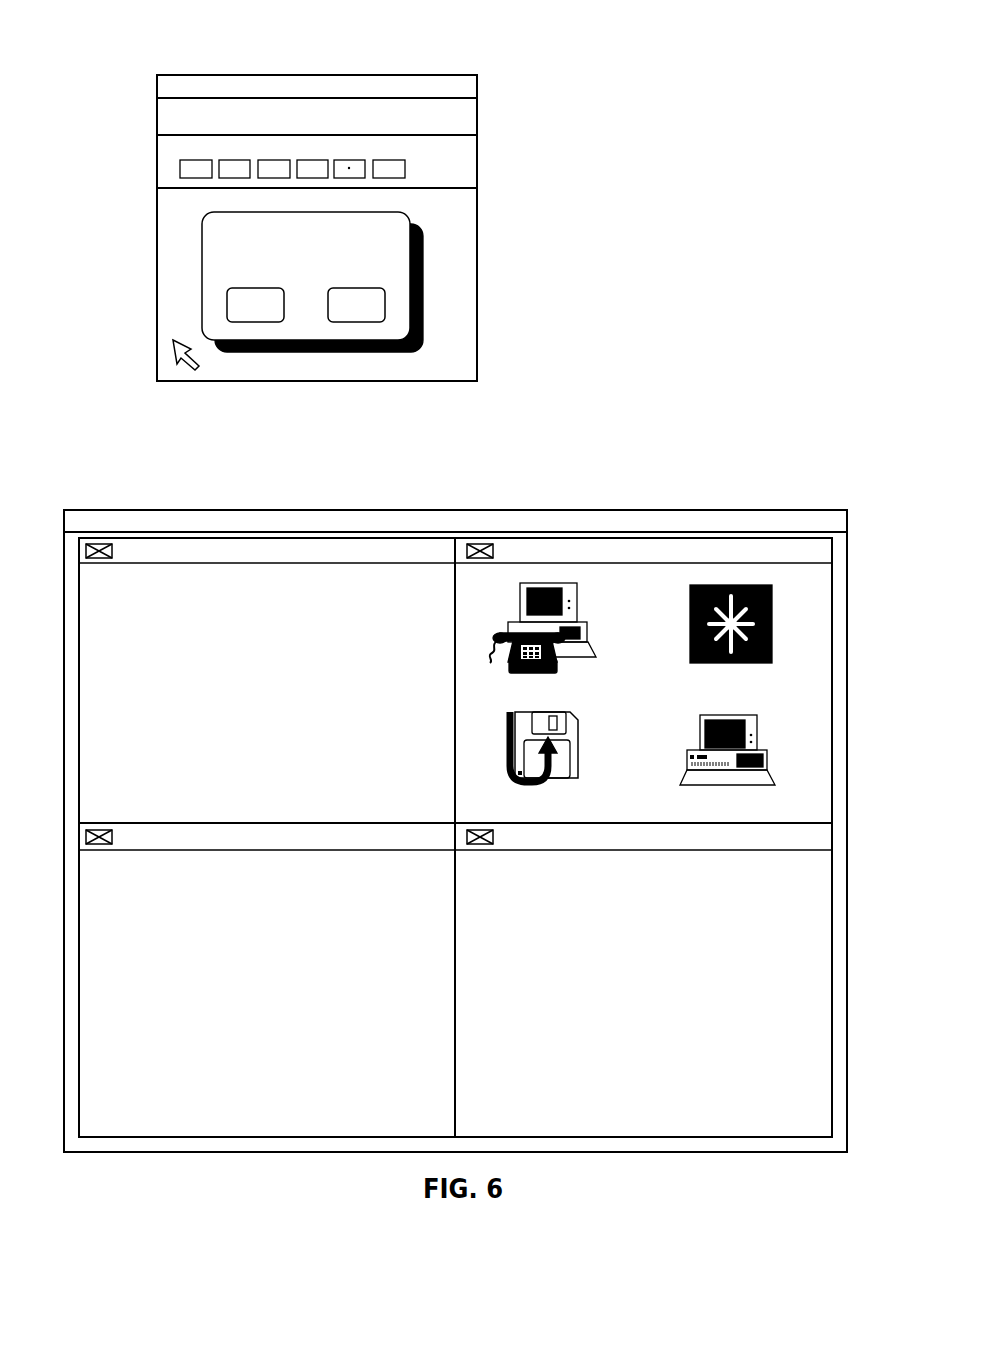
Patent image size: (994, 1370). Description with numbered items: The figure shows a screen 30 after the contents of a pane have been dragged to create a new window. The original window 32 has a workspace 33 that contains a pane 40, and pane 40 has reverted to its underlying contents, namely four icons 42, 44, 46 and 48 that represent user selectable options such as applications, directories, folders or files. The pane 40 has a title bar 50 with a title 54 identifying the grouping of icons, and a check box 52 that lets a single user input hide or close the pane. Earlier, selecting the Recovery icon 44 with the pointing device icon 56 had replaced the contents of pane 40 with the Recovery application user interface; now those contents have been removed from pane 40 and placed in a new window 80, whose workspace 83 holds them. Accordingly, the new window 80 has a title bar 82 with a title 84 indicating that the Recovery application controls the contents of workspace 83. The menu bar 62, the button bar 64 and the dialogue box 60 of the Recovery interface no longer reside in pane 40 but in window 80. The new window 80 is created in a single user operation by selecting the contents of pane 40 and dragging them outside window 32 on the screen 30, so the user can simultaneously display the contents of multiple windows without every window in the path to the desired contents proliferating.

The screen 30 is at (130, 1152).
The window 32 is at (781, 510).
The workspace 33 is at (831, 595).
The pane 40 is at (579, 562).
The icon 42 is at (495, 650).
The Recovery icon 44 is at (503, 773).
The icon 46 is at (772, 639).
The icon 48 is at (777, 772).
The title bar 50 is at (712, 552).
The check box 52 is at (482, 541).
The title 54 is at (654, 524).
The pointing device icon 56 is at (181, 367).
The dialogue box 60 is at (407, 217).
The menu bar 62 is at (460, 113).
The button bar 64 is at (458, 160).
The new window 80 is at (488, 363).
The title bar 82 is at (434, 85).
The workspace 83 is at (157, 232).
The title 84 is at (288, 62).